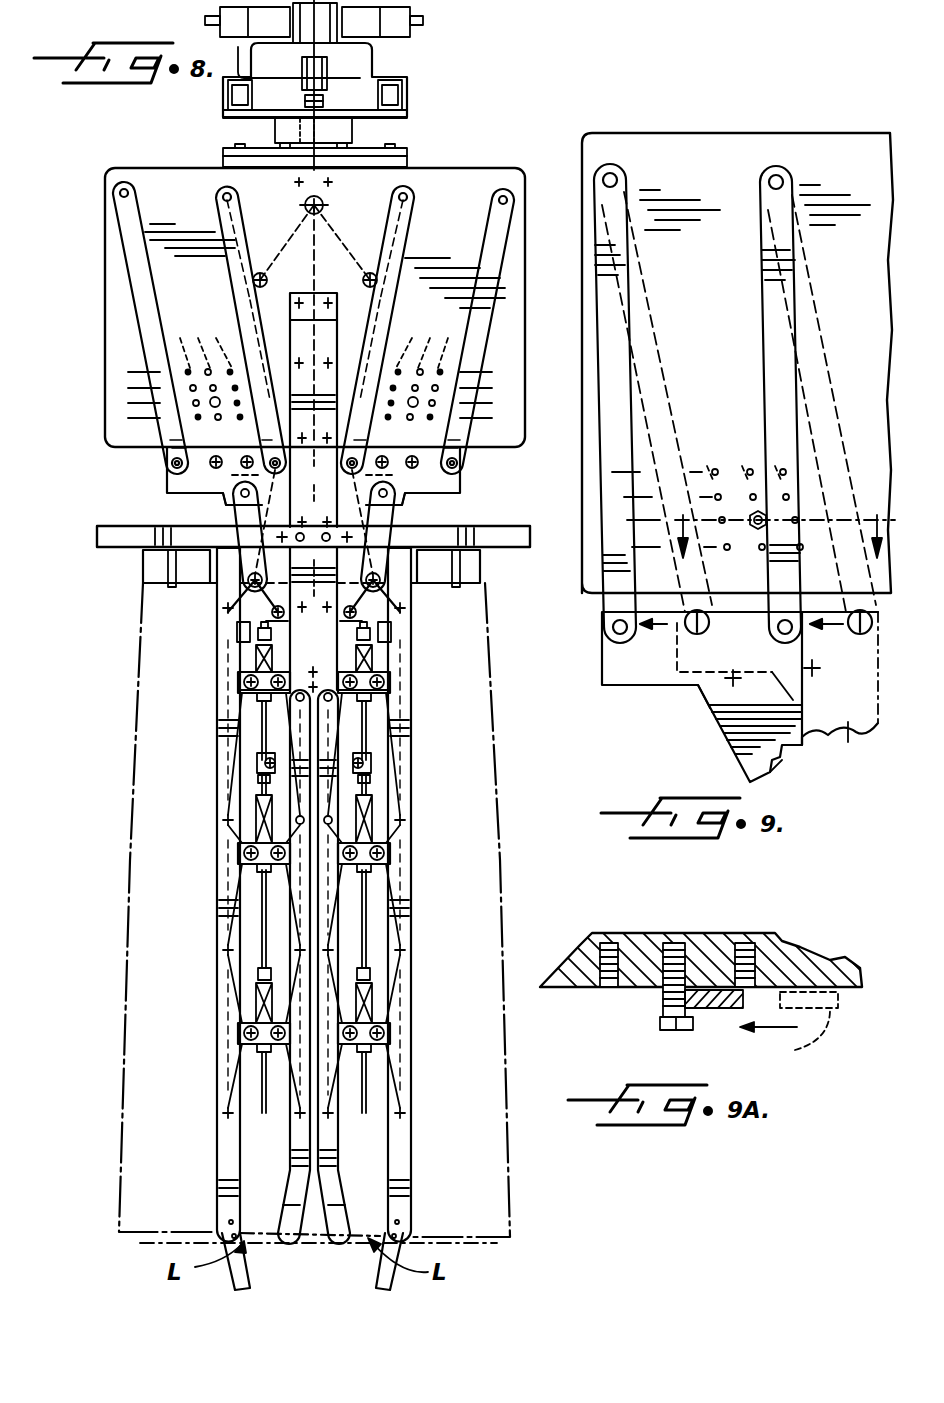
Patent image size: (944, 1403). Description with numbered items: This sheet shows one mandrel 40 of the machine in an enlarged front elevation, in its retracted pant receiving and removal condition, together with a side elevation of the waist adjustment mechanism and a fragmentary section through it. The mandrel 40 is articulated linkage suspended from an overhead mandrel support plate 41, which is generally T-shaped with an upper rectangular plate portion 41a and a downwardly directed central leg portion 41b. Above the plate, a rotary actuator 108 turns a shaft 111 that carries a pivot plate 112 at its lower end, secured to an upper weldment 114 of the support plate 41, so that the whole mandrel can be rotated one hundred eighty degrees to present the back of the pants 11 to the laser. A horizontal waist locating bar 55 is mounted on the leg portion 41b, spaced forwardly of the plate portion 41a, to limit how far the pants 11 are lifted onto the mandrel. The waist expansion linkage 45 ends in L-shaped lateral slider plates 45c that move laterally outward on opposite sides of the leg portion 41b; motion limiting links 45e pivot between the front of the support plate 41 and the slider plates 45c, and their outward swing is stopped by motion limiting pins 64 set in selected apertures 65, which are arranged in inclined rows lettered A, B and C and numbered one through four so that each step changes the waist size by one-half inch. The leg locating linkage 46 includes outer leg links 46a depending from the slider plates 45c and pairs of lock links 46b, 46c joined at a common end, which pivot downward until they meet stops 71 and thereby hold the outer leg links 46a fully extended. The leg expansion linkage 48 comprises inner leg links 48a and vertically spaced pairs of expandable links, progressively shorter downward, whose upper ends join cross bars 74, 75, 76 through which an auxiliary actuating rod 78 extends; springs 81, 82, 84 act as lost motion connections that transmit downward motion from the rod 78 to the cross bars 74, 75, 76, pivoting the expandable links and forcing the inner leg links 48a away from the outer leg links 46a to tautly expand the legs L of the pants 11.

In FIG. 8, the rotary actuator 108 is at (378, 27).
In FIG. 8, the shaft 111 is at (320, 143).
In FIG. 8, the pivot plate 112 is at (223, 152).
In FIG. 8, the upper weldment 114 is at (222, 165).
In FIG. 8, the mandrel support plate 41 is at (142, 180).
In FIG. 9, the mandrel support plate 41 is at (830, 152).
In FIG. 9A, the mandrel support plate 41 is at (643, 938).
In FIG. 8, the upper rectangular plate portion 41a is at (120, 325).
In FIG. 8, the central leg portion 41b is at (300, 572).
In FIG. 8, the waist expansion linkage 45 is at (163, 480).
In FIG. 9, the waist expansion linkage 45 is at (698, 694).
In FIG. 8, the lateral slider plates 45c is at (200, 497).
In FIG. 9, the lateral slider plates 45c is at (730, 757).
In FIG. 8, the motion limiting links 45e is at (240, 287).
In FIG. 9, the motion limiting links 45e is at (763, 318).
In FIG. 9A, the motion limiting links 45e is at (712, 1012).
In FIG. 8, the apertures 65 is at (190, 372).
In FIG. 9, the apertures 65 is at (750, 472).
In FIG. 9A, the apertures 65 is at (752, 950).
In FIG. 8, the motion limiting pins 64 is at (213, 405).
In FIG. 9, the motion limiting pins 64 is at (764, 517).
In FIG. 9A, the motion limiting pins 64 is at (658, 1023).
In FIG. 8, the waist locating bar 55 is at (503, 550).
In FIG. 8, the leg locating linkage 46 is at (214, 927).
In FIG. 8, the outer leg links 46a is at (222, 1137).
In FIG. 8, the lock link 46b is at (245, 605).
In FIG. 8, the lock link 46c is at (237, 632).
In FIG. 8, the mandrel 40 is at (175, 773).
In FIG. 8, the pants 11 is at (122, 1043).
In FIG. 8, the leg expansion linkage 48 is at (288, 1148).
In FIG. 8, the inner leg links 48a is at (287, 1203).
In FIG. 8, the stops 71 is at (257, 636).
In FIG. 8, the spring 81 is at (255, 660).
In FIG. 8, the cross bar 74 is at (262, 685).
In FIG. 8, the auxiliary actuating rod 78 is at (262, 730).
In FIG. 8, the spring 82 is at (257, 827).
In FIG. 8, the cross bar 75 is at (258, 868).
In FIG. 8, the spring 84 is at (258, 995).
In FIG. 8, the cross bar 76 is at (257, 1035).